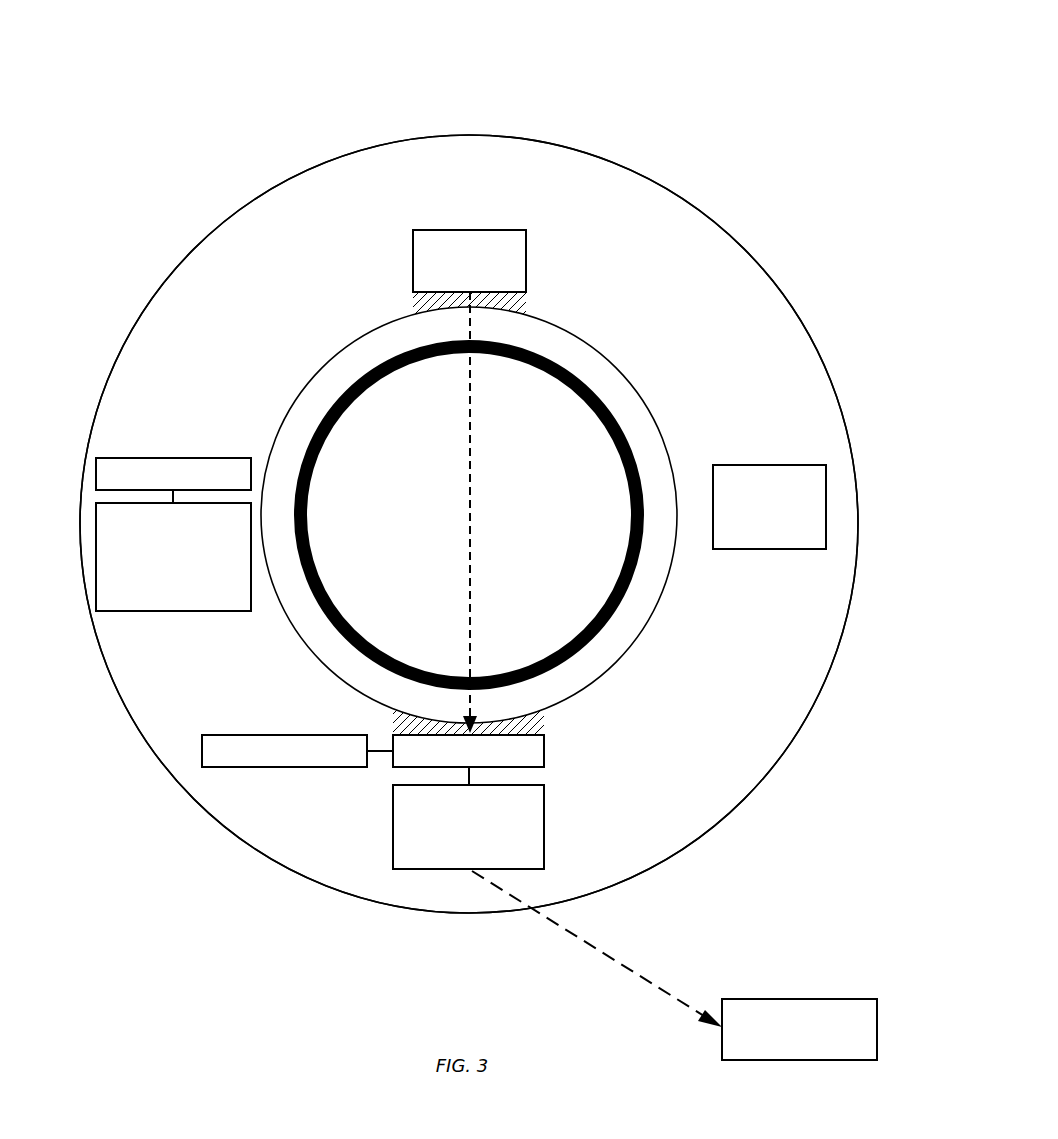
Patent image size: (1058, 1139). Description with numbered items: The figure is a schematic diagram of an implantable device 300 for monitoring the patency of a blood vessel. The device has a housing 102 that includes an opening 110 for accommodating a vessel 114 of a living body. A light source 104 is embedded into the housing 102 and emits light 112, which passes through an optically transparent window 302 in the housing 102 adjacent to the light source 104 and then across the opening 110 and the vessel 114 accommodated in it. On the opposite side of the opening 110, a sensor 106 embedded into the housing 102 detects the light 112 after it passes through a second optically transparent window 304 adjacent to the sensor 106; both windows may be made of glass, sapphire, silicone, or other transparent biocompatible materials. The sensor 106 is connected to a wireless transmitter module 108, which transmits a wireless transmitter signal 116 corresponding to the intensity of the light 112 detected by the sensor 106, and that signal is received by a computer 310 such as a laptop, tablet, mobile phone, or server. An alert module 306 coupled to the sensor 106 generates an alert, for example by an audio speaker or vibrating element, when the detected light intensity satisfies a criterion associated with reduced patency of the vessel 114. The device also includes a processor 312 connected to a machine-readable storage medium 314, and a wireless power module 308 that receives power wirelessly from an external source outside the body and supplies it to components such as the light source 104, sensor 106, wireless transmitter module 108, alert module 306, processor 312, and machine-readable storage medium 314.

The implantable device 300 is at (698, 108).
The housing 102 is at (484, 199).
The light source 104 is at (518, 273).
The optically transparent window 302 is at (413, 305).
The opening 110 is at (357, 361).
The vessel 114 is at (319, 424).
The light 112 is at (350, 712).
The processor 312 is at (96, 474).
The machine-readable storage medium 314 is at (96, 556).
The wireless power module 308 is at (826, 465).
The alert module 306 is at (247, 735).
The optically transparent window 304 is at (542, 719).
The sensor 106 is at (545, 758).
The wireless transmitter module 108 is at (545, 840).
The wireless transmitter signal 116 is at (620, 970).
The computer 310 is at (805, 1060).